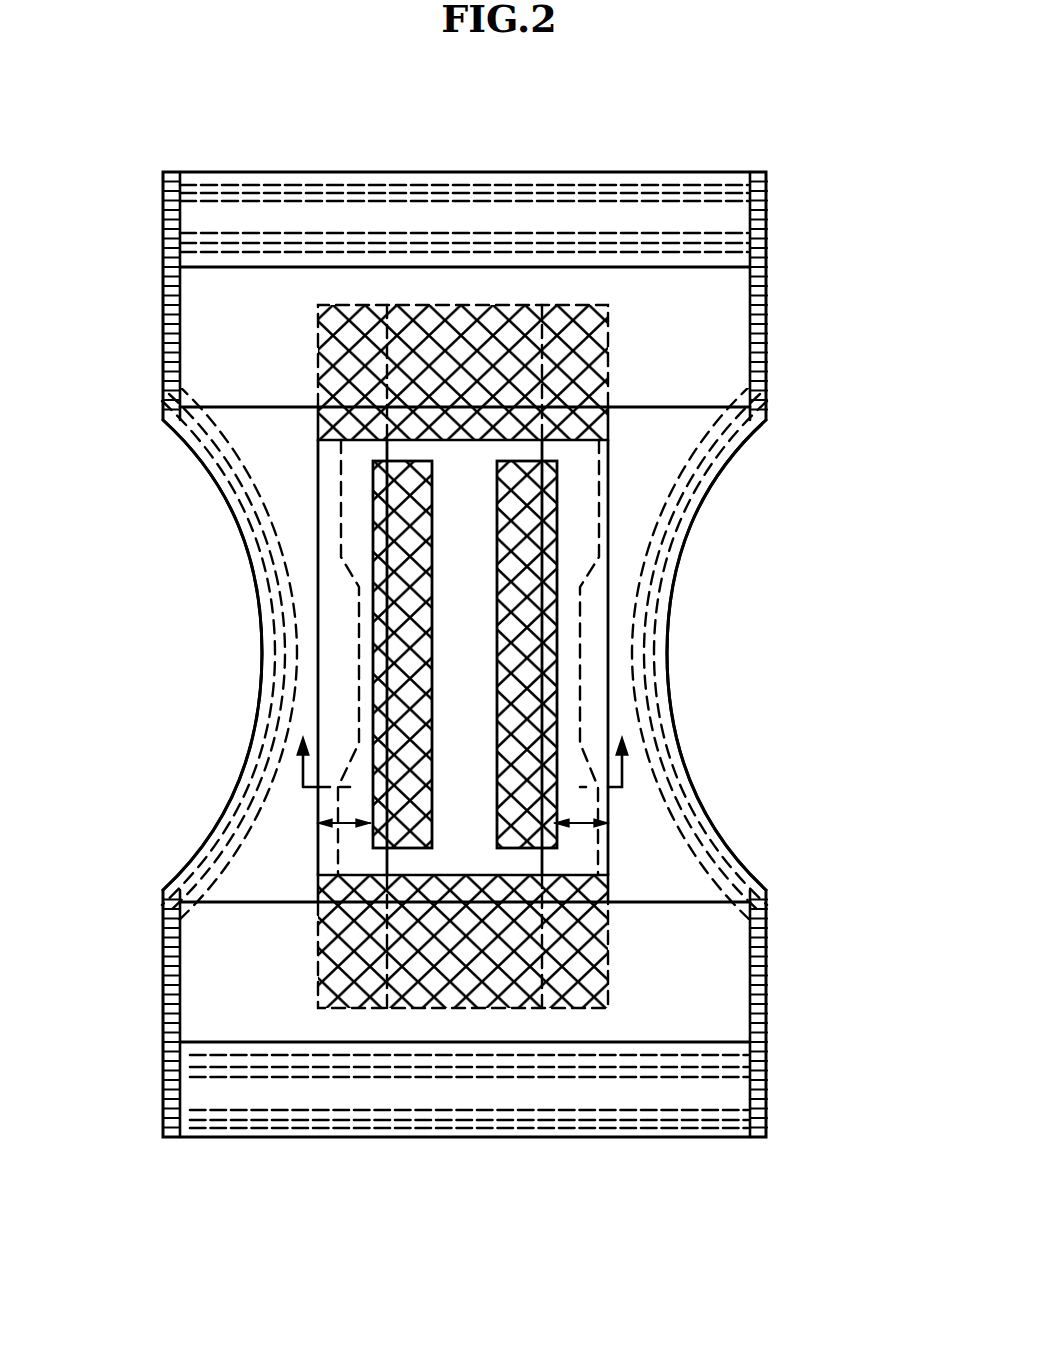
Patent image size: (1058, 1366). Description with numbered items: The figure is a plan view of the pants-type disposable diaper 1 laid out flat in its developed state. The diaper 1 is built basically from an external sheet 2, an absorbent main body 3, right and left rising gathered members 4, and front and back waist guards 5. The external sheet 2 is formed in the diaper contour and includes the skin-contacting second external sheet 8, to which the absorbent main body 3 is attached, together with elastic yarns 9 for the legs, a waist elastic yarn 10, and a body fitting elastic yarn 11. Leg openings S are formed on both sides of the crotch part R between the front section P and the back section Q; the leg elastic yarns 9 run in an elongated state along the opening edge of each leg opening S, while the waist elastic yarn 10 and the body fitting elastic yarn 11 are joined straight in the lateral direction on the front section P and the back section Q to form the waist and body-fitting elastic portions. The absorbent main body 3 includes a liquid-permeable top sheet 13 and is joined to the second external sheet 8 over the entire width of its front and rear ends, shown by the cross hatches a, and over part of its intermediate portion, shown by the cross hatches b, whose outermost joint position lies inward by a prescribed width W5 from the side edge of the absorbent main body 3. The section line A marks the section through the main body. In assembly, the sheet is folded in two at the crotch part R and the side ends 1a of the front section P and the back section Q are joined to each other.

The disposable diaper 1 is at (800, 173).
The side ends 1a is at (163, 320).
The external sheet 2 is at (723, 848).
The absorbent main body 3 is at (477, 633).
The rising gathered members 4 is at (350, 803).
The waist guards 5 is at (722, 308).
The second external sheet 8 is at (640, 823).
The elastic yarns for legs 9 is at (260, 760).
The waist elastic yarn 10 is at (381, 186).
The body fitting elastic yarn 11 is at (629, 240).
The liquid-permeable top sheet 13 is at (410, 678).
The cross hatches a is at (353, 357).
The cross hatches b is at (380, 617).
The leg openings S is at (235, 520).
The crotch part R is at (627, 538).
The back section Q is at (737, 243).
The front section P is at (717, 1080).
The prescribed width W5 is at (345, 826).
The section line A- A is at (462, 742).